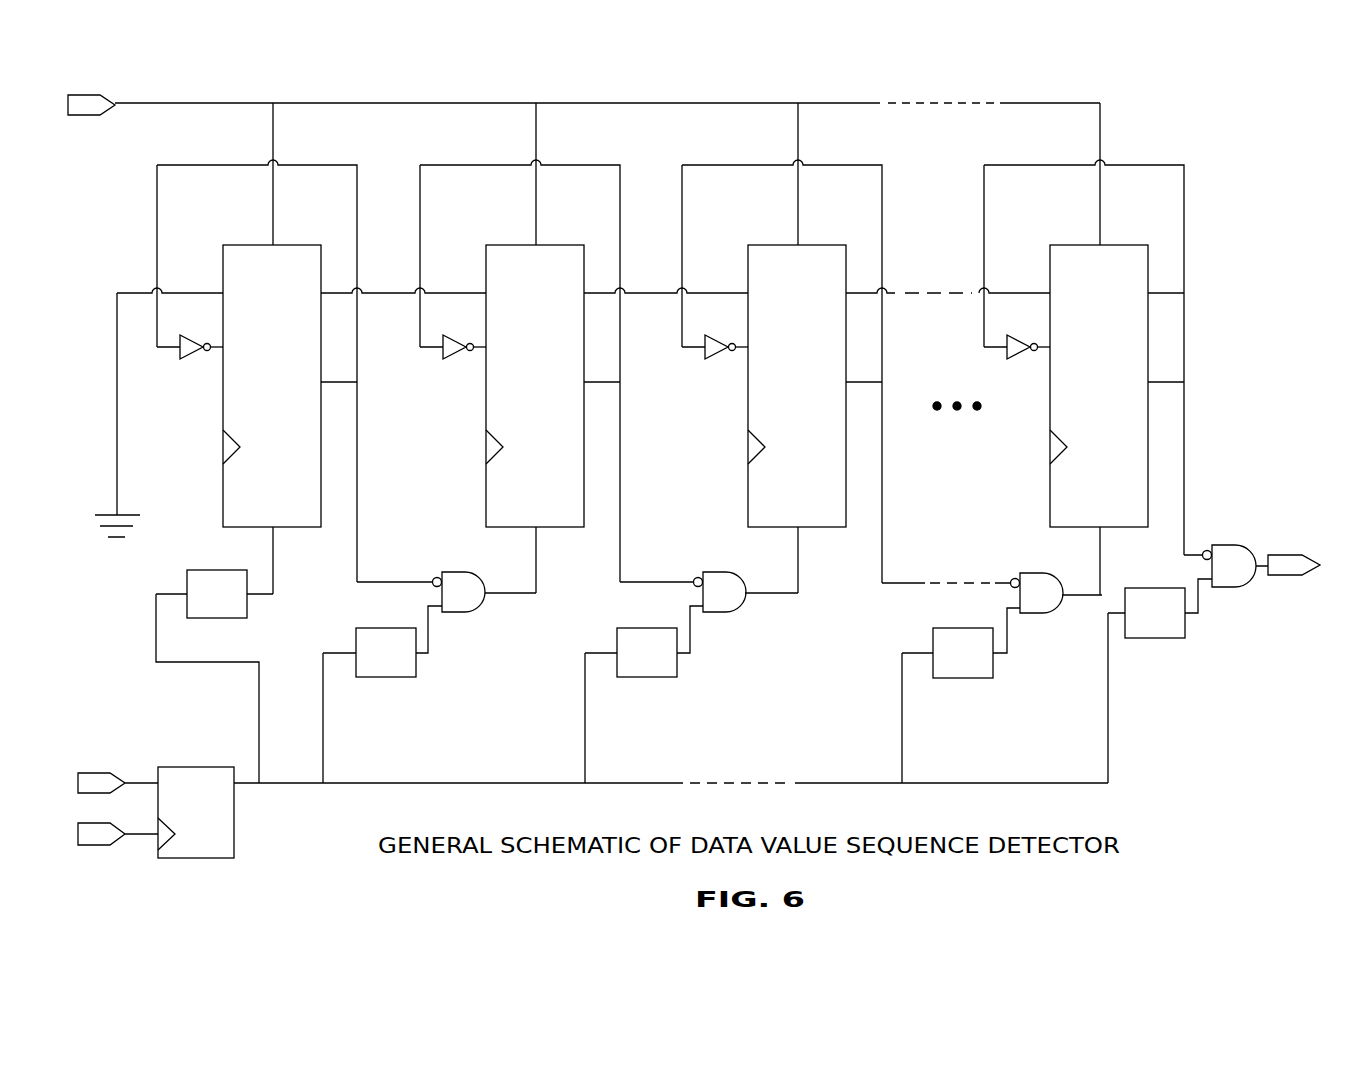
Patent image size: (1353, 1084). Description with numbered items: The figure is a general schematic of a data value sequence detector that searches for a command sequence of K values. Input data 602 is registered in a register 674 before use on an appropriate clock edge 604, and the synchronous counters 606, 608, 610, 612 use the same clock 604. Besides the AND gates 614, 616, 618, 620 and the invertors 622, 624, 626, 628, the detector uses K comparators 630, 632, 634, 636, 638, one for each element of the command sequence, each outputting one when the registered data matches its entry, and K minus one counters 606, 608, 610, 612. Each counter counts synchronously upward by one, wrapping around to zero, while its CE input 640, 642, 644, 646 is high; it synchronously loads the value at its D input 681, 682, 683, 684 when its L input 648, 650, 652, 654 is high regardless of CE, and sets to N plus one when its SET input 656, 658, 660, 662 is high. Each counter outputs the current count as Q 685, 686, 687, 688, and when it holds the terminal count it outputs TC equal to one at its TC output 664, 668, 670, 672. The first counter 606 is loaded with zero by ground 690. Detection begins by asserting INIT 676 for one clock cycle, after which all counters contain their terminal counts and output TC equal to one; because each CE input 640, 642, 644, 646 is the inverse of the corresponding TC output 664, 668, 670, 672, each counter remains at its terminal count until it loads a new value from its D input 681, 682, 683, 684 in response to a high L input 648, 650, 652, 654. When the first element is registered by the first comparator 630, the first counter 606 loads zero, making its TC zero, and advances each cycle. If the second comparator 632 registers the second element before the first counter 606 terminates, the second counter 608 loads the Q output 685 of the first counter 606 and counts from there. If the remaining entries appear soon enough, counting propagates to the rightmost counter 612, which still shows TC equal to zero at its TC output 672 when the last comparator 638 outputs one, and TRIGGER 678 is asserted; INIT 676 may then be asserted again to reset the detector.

The input data 602 is at (108, 731).
The clock 604 is at (112, 904).
The first counter 606 is at (287, 320).
The second counter 608 is at (550, 320).
The counter 610 is at (812, 320).
The rightmost counter 612 is at (1114, 320).
The AND gate 614 is at (473, 644).
The AND gate 616 is at (733, 645).
The AND gate 618 is at (1052, 645).
The AND gate 620 is at (1243, 618).
The invertor 622 is at (194, 360).
The invertor 624 is at (457, 360).
The invertor 626 is at (719, 360).
The invertor 628 is at (1021, 360).
The first comparator 630 is at (230, 647).
The second comparator 632 is at (400, 706).
The comparator 634 is at (660, 706).
The comparator 636 is at (978, 708).
The last comparator 638 is at (1168, 669).
The CE input 640 is at (222, 347).
The CE input 642 is at (485, 347).
The CE input 644 is at (747, 347).
The CE input 646 is at (1049, 347).
The L input 648 is at (262, 510).
The L input 650 is at (525, 510).
The L input 652 is at (787, 510).
The L input 654 is at (1089, 510).
The SET input 656 is at (252, 268).
The SET input 658 is at (515, 268).
The SET input 660 is at (777, 268).
The SET input 662 is at (1079, 268).
The TC output 664 is at (312, 392).
The TC output 668 is at (575, 392).
The TC output 670 is at (837, 392).
The TC output 672 is at (1139, 392).
The data flip-flop 674 is at (178, 782).
The INIT 676 is at (98, 170).
The TRIGGER 678 is at (1308, 641).
The D input 681 is at (222, 292).
The D input 682 is at (485, 292).
The D input 683 is at (747, 292).
The D input 684 is at (1049, 292).
The Q output 685 is at (320, 297).
The Q output 686 is at (583, 297).
The Q output 687 is at (845, 297).
The Q output 688 is at (1147, 297).
The ground 690 is at (100, 502).